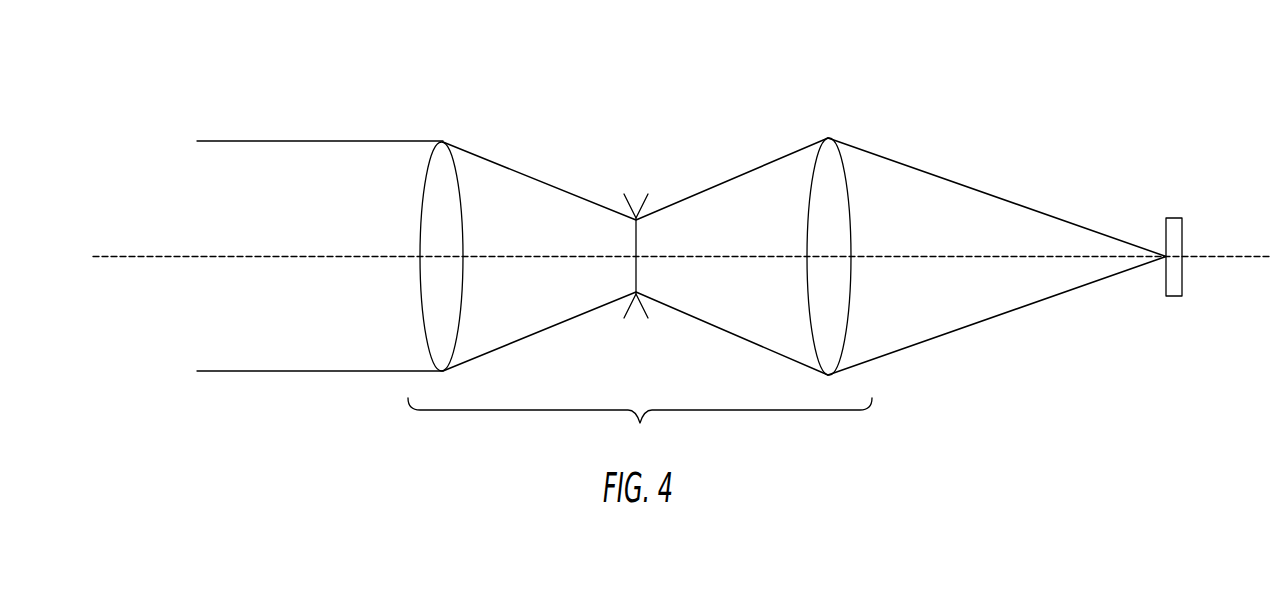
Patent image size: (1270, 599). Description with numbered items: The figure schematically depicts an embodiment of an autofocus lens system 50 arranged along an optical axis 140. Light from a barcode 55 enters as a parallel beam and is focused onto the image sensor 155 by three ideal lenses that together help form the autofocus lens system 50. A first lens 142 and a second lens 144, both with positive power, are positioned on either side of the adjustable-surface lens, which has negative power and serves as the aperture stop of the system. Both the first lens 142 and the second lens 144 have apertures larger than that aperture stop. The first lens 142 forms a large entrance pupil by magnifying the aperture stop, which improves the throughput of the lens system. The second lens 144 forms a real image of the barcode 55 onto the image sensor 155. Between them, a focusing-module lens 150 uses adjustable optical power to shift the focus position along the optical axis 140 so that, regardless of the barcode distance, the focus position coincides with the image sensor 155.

The autofocus lens system 50 is at (616, 270).
The barcode 55 is at (272, 122).
The optical axis 140 is at (157, 255).
The first lens 142 is at (423, 187).
The second lens 144 is at (810, 187).
The focusing-module lens 150 is at (636, 182).
The image sensor 155 is at (1163, 217).